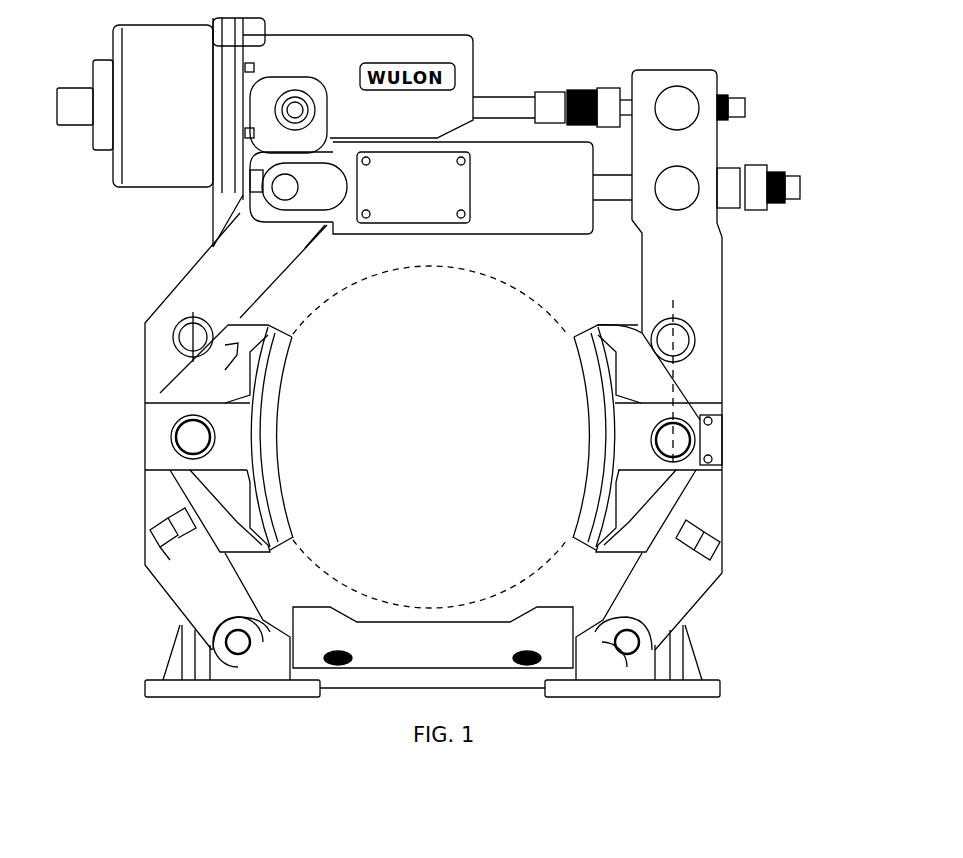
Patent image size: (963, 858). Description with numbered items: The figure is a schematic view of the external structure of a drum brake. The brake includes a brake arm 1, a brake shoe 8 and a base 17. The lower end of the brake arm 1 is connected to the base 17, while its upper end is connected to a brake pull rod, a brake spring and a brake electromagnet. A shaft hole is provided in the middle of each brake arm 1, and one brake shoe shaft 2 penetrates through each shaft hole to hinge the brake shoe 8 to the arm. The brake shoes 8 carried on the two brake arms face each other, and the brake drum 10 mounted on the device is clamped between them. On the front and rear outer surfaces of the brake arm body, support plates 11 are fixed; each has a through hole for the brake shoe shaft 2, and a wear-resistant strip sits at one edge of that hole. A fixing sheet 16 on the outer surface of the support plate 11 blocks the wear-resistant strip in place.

The brake arm 1 is at (692, 268).
The brake shoe shaft 2 is at (190, 437).
The brake shoe 8 is at (637, 383).
The brake drum 10 is at (367, 328).
The support plate 11 is at (717, 460).
The fixing sheet 16 is at (710, 425).
The base 17 is at (675, 690).